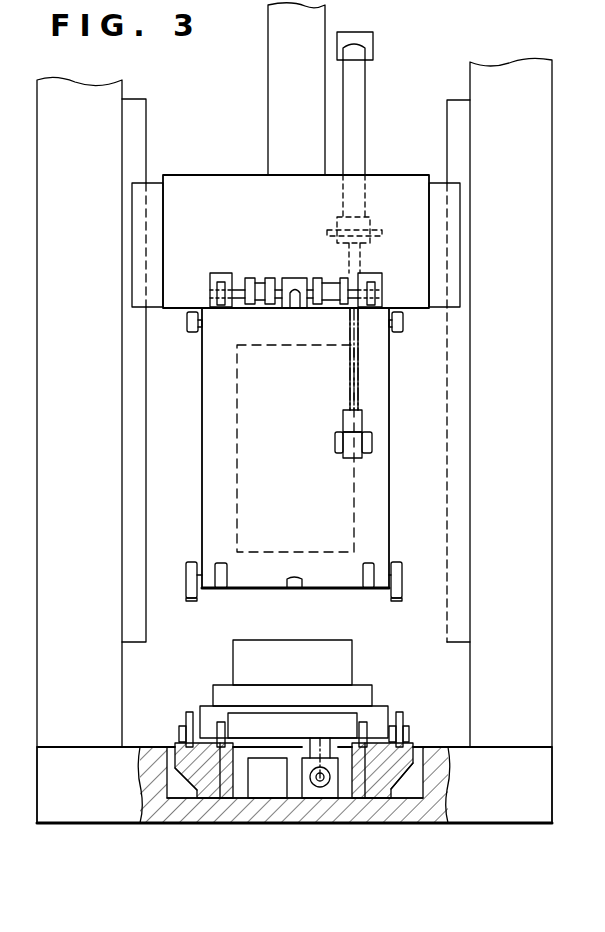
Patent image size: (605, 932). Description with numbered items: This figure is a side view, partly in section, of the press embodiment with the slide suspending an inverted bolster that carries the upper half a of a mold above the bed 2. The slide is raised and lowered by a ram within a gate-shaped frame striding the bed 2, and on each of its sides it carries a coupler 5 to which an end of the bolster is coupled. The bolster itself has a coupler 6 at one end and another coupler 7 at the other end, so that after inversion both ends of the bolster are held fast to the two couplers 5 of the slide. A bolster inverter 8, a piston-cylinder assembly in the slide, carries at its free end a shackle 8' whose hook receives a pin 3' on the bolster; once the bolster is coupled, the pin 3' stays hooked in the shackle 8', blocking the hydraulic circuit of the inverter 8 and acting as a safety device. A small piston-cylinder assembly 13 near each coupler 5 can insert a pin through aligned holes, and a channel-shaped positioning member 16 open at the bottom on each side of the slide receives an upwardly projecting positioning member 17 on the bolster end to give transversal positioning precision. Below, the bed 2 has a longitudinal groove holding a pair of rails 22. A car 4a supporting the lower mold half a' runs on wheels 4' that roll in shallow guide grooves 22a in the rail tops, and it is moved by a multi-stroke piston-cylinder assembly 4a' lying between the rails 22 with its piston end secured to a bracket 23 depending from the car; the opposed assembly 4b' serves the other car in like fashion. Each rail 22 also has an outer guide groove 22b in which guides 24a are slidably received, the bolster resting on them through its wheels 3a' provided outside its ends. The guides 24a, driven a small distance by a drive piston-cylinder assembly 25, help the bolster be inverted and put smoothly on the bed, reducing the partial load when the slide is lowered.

The bed 2 is at (498, 808).
The bolster inverter 8 is at (371, 152).
The coupler 5 is at (222, 275).
The coupler 6 is at (218, 300).
The small size piston-cylinder assembly 13 is at (262, 282).
The channel-shaped positioning member 16 is at (294, 282).
The upwardly projecting positioning member 17 is at (292, 312).
The upper half of mold A a is at (273, 448).
The lower half of mold A a' is at (292, 644).
The wheels of bolster 3a' is at (298, 456).
The coupler 7 is at (221, 586).
The shackle 8' is at (322, 379).
The pin 3' is at (382, 434).
The car 4a is at (312, 685).
The wheels of car 4' is at (289, 693).
The guides 24a is at (189, 712).
The drive piston-cylinder assembly 25 is at (182, 735).
The rails 22 is at (222, 788).
The guide grooves 22a is at (366, 793).
The guide groove 22b is at (183, 785).
The bracket 23 is at (270, 790).
The piston-cylinder assembly 4a' is at (327, 822).
The piston-cylinder assembly 4b' is at (295, 852).